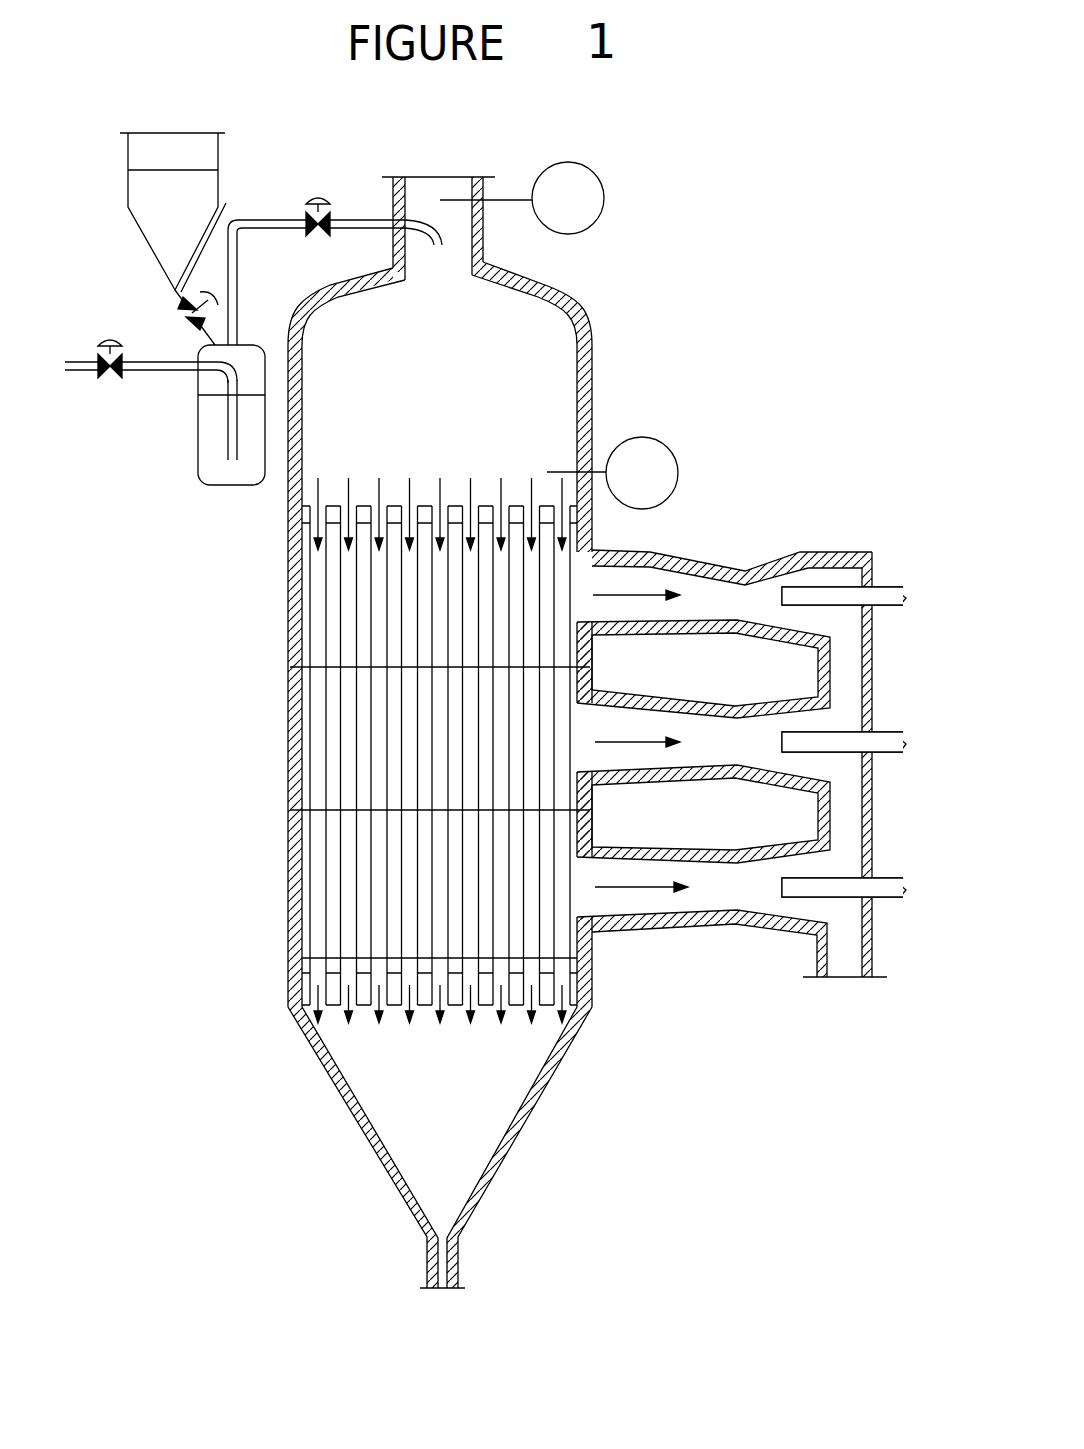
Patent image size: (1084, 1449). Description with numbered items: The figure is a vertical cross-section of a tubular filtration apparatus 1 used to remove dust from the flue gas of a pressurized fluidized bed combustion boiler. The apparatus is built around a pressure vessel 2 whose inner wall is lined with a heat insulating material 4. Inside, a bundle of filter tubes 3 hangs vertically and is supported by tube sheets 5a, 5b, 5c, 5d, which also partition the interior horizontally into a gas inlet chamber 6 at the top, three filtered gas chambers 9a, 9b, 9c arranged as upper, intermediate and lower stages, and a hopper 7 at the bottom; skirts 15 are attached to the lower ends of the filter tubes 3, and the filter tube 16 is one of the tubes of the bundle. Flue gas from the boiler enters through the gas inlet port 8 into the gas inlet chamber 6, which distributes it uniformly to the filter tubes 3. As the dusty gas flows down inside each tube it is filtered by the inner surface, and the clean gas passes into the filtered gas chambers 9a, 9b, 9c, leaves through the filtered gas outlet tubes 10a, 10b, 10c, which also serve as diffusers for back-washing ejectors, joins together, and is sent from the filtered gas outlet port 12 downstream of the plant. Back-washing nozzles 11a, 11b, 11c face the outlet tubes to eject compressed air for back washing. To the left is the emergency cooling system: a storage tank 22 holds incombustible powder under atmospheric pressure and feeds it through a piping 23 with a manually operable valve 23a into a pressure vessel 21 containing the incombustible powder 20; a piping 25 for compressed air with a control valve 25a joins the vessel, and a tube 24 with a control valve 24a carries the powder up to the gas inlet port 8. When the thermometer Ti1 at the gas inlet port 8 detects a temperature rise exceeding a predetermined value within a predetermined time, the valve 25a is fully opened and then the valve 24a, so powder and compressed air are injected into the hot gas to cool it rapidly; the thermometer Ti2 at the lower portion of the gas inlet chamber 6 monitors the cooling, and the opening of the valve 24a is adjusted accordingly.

The filtration apparatus 1 is at (572, 292).
The pressure vessel 2 is at (592, 352).
The filter tubes 3 is at (374, 732).
The heat insulating material 4 is at (584, 406).
The tube sheet 5a is at (300, 517).
The tube sheet 5b is at (297, 665).
The tube sheet 5c is at (298, 811).
The tube sheet 5d is at (298, 957).
The gas inlet chamber 6 is at (470, 394).
The hopper 7 is at (400, 1100).
The gas inlet port 8 is at (451, 176).
The filtered gas chamber 9a is at (330, 578).
The filtered gas chamber 9b is at (348, 783).
The filtered gas chamber 9c is at (330, 886).
The filtered gas outlet tube 10a is at (725, 556).
The filtered gas outlet tube 10b is at (695, 700).
The filtered gas outlet tube 10c is at (695, 847).
The back-washing nozzle 11a is at (782, 587).
The back-washing nozzle 11b is at (782, 737).
The back-washing nozzle 11c is at (782, 882).
The filtered gas outlet port 12 is at (838, 978).
The skirts 15 is at (315, 985).
The reaction tube 16 is at (374, 738).
The incombustible powder 20 is at (215, 470).
The pressure vessel 21 is at (197, 438).
The storage tank 22 is at (223, 133).
The piping 23 is at (224, 210).
The manually operable valve 23a is at (185, 311).
The tube 24 is at (355, 218).
The control valve 24a is at (320, 192).
The piping 25 is at (155, 372).
The control valve 25a is at (140, 318).
The thermometer Ti1 is at (522, 198).
The thermometer Ti2 is at (612, 473).